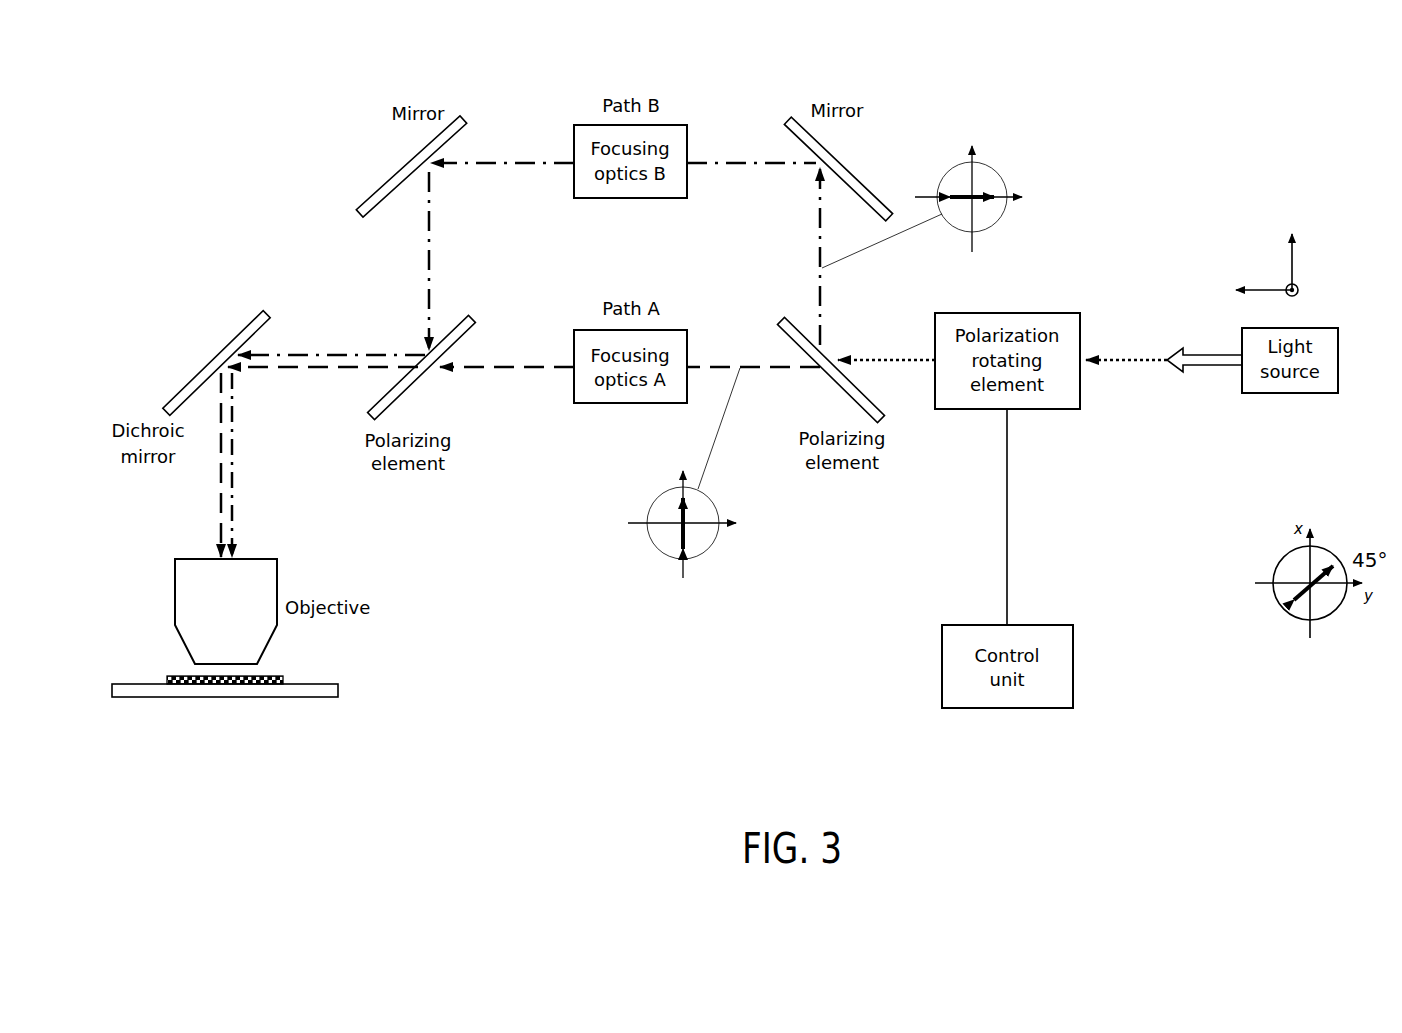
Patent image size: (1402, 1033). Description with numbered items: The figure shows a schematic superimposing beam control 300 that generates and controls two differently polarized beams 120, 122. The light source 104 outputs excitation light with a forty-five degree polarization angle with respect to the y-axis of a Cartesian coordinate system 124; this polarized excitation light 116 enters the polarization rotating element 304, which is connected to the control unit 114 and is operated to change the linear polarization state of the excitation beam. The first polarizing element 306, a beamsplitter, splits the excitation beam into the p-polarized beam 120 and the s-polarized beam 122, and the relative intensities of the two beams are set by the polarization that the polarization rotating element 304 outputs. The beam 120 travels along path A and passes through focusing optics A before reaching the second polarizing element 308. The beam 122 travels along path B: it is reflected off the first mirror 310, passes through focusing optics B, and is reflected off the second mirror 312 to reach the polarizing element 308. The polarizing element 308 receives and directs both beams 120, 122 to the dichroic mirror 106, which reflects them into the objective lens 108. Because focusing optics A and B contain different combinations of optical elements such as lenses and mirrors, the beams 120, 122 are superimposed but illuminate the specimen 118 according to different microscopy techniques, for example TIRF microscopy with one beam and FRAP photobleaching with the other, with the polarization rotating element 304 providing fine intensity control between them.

The superimposing beam control 300 is at (1208, 81).
The second mirror 312 is at (385, 187).
The first mirror 310 is at (867, 187).
The dichroic mirror 106 is at (245, 330).
The second polarizing element 308 is at (405, 395).
The first polarizing element 306 is at (882, 420).
The beam in the second polarization state 122 is at (820, 313).
The beam in the first polarization state 120 is at (775, 368).
The polarization rotating element 304 is at (1053, 320).
The light source 104 is at (1307, 393).
The polarized excitation light 116 is at (1222, 425).
The Cartesian coordinate system 124 is at (1324, 236).
The control unit 114 is at (1005, 700).
The objective lens 108 is at (226, 611).
The specimen 118 is at (299, 667).